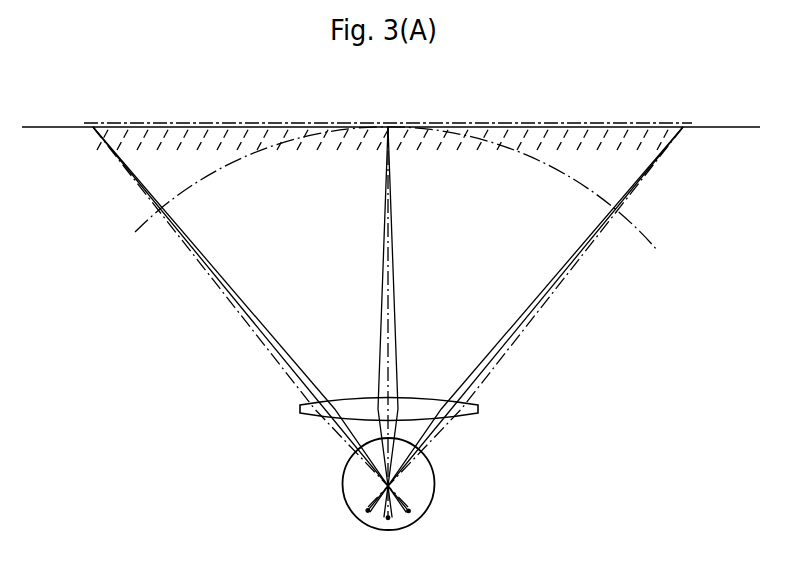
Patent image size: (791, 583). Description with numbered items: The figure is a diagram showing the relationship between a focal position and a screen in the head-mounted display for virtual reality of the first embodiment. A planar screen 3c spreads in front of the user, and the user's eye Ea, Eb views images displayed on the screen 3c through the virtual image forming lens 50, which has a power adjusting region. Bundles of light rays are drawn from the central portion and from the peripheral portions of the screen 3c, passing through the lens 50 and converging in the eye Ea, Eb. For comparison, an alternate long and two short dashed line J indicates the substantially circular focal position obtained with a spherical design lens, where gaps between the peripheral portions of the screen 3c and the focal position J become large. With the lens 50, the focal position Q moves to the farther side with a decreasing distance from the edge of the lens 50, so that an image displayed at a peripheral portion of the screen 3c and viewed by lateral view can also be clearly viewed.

The screen 3c is at (712, 128).
The focal position J is at (640, 233).
The focal position Q is at (133, 138).
The virtual image forming lens 50 is at (505, 403).
The eye Ea is at (440, 484).
The eye Eb is at (435, 487).